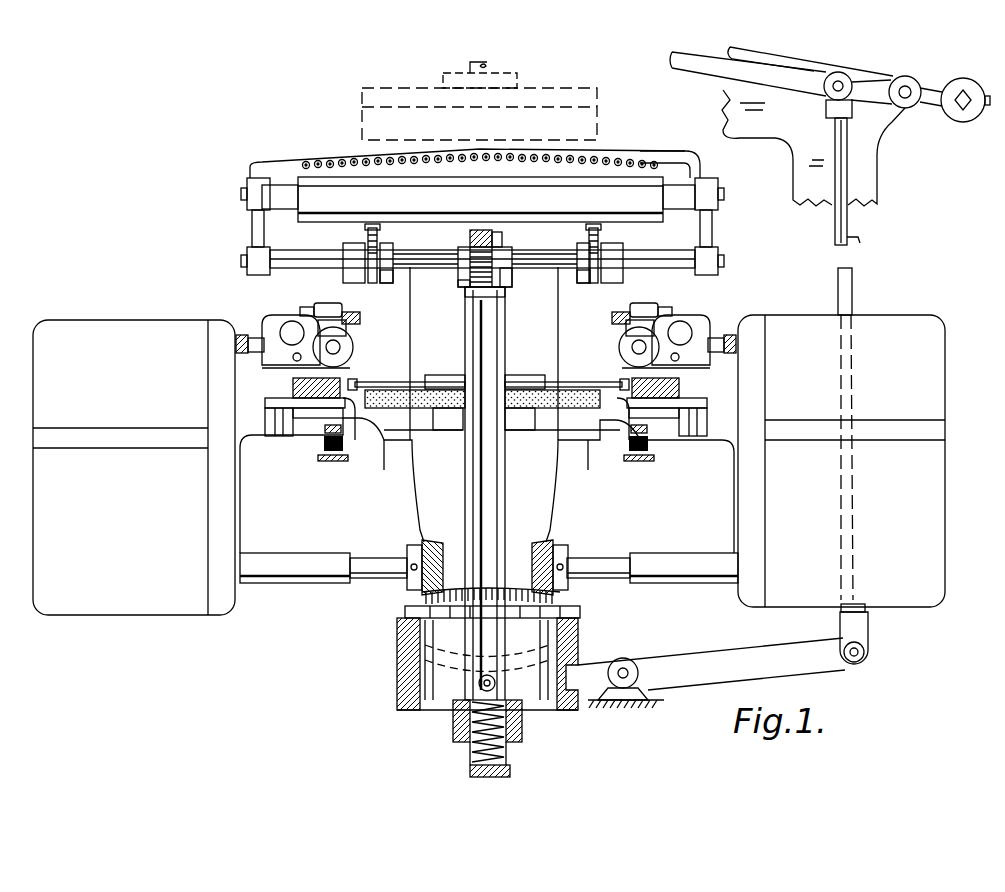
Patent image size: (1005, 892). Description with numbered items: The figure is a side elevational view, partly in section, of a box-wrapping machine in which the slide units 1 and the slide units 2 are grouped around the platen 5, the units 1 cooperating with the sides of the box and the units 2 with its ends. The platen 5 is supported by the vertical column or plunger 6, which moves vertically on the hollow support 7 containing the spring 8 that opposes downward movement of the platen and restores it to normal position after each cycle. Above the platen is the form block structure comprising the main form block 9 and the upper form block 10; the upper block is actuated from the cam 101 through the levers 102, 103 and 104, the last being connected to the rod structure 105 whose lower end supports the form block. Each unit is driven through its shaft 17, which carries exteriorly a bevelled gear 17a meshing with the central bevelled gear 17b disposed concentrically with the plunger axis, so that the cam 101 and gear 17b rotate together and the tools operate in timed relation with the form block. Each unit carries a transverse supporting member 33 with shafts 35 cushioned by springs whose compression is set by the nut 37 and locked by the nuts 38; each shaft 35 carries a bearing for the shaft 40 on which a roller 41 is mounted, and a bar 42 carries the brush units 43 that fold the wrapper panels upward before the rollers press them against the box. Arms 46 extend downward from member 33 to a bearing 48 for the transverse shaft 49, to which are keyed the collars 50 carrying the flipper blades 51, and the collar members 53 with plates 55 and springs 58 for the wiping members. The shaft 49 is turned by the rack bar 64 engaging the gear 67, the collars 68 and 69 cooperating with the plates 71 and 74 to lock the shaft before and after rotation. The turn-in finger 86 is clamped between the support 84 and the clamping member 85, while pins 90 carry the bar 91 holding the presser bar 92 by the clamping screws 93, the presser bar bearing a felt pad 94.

The slide unit 1 is at (540, 522).
The slide unit 2 is at (147, 333).
The platen 5 is at (425, 228).
The vertical column or plunger 6 is at (500, 513).
The hollow support 7 is at (512, 767).
The spring 8 is at (470, 757).
The main form block 9 is at (588, 136).
The upper form block 10 is at (588, 98).
The shaft 17 is at (322, 576).
The bevelled gear 17a is at (433, 541).
The bevelled gear 17b is at (572, 621).
The supporting member 33 is at (279, 327).
The shaft 35 is at (306, 319).
The nut 37 is at (252, 340).
The lock nuts 38 is at (238, 338).
The shaft 40 is at (720, 194).
The roller 41 is at (335, 195).
The bar 42 is at (708, 171).
The brush units 43 is at (610, 158).
The arms 46 is at (257, 226).
The bearing 48 is at (720, 266).
The shaft 49 is at (305, 262).
The collars 50 is at (355, 270).
The flipper blades 51 is at (370, 240).
The collar members 53 is at (393, 271).
The plate 55 is at (422, 253).
The spring 58 is at (364, 246).
The rack bar 64 is at (512, 253).
The gear 67 is at (497, 292).
The collar member 68 is at (506, 273).
The collar member 69 is at (463, 289).
The plate 71 is at (499, 240).
The plate 74 is at (470, 240).
The transversely extending bar or support 84 is at (312, 392).
The clamping member 85 is at (421, 380).
The turn-in finger or plate 86 is at (356, 385).
The pins 90 is at (323, 406).
The bar 91 is at (338, 434).
The presser bar or block 92 is at (358, 420).
The clamping screws 93 is at (334, 462).
The pad 94 is at (357, 412).
The cam 101 is at (398, 670).
The lever 102 is at (597, 690).
The lever 103 is at (851, 276).
The lever 104 is at (702, 68).
The rod structure 105 is at (490, 65).